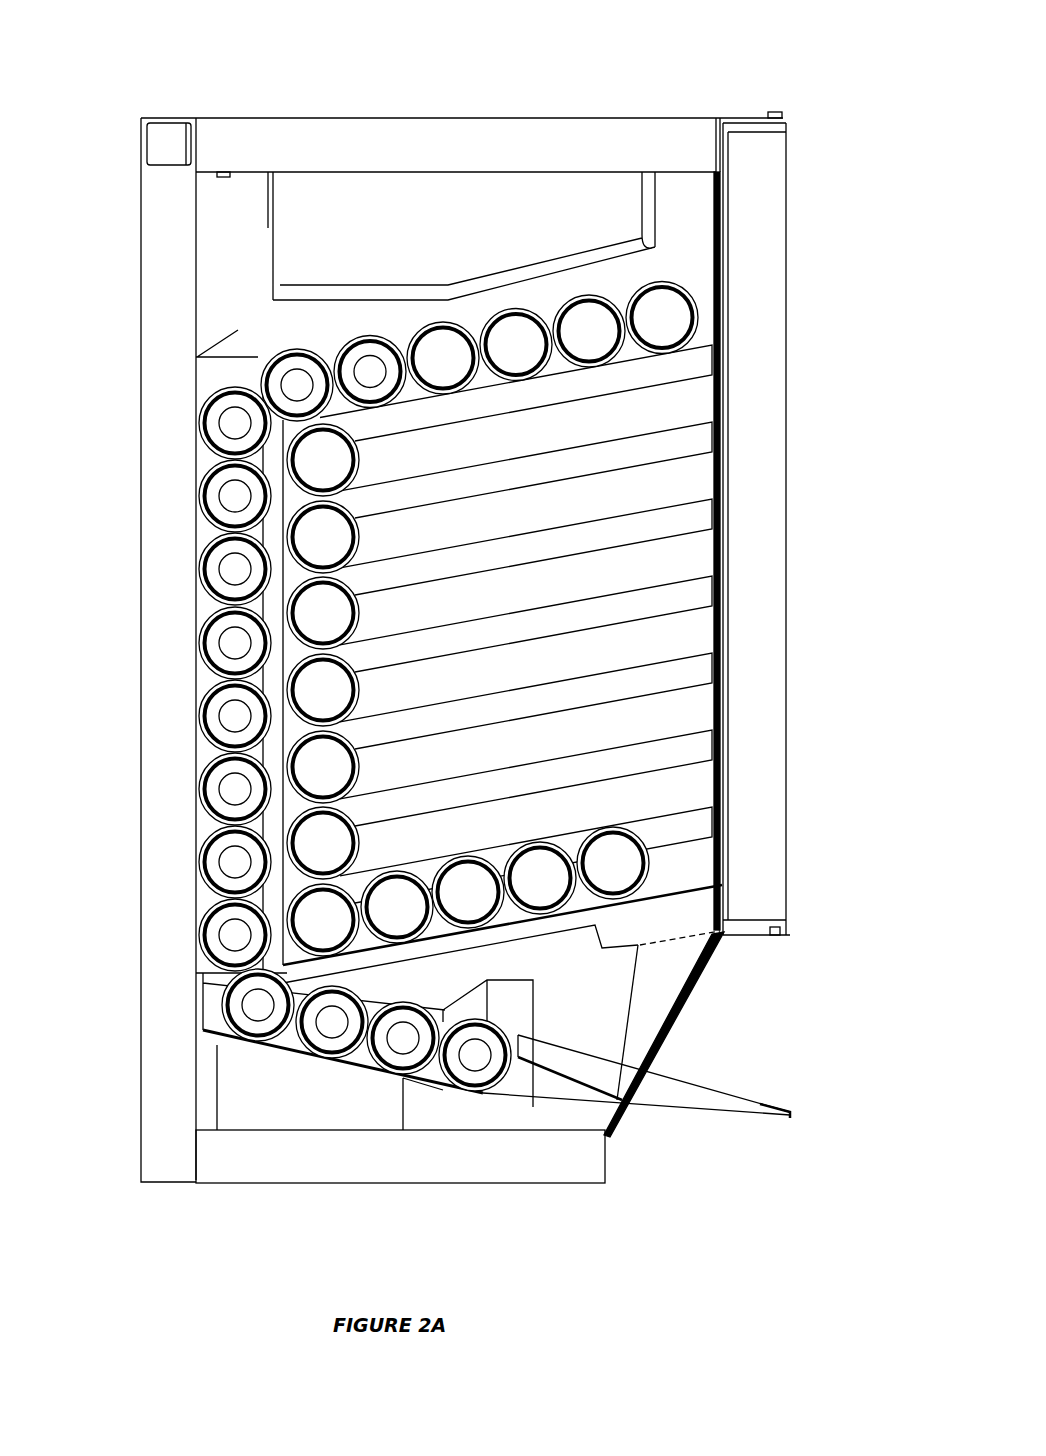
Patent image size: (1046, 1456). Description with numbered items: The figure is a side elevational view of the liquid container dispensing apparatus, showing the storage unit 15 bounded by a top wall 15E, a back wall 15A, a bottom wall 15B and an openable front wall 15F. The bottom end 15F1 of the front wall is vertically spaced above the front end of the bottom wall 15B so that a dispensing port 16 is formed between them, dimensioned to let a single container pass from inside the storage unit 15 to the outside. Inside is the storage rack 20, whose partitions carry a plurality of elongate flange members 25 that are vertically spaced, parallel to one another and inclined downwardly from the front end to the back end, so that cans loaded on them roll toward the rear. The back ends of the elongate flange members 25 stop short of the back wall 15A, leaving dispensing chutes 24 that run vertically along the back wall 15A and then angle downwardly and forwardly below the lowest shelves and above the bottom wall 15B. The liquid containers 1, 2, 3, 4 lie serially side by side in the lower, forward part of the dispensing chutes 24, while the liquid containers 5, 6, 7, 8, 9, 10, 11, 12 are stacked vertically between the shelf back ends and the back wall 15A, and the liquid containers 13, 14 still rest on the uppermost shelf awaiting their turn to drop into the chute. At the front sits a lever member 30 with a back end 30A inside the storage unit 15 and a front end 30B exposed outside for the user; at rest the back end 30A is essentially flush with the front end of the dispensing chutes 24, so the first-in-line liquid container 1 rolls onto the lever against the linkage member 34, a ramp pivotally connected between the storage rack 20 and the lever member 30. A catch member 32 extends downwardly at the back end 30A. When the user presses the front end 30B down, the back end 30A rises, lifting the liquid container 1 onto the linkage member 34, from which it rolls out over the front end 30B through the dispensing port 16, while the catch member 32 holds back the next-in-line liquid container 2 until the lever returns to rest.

The storage unit 15 is at (255, 100).
The top wall 15E is at (455, 117).
The back wall 15A is at (150, 660).
The bottom wall 15B is at (488, 1185).
The openable front wall 15F is at (788, 345).
The bottom end of front wall 15F1 is at (780, 942).
The dispensing port 16 is at (677, 1033).
The storage rack 20 is at (710, 352).
The elongate flange members 25 is at (712, 428).
The dispensing chutes 24 is at (288, 968).
The lever member 30 is at (658, 1093).
The back end of lever member 30A is at (443, 1090).
The front end of lever member 30B is at (785, 1117).
The catch member 32 is at (445, 1086).
The linkage member 34 is at (575, 1067).
The liquid container 1 is at (475, 1055).
The liquid container 2 is at (403, 1038).
The liquid container 3 is at (332, 1022).
The liquid container 4 is at (258, 1005).
The liquid container 5 is at (235, 935).
The liquid container 6 is at (235, 862).
The liquid container 7 is at (235, 789).
The liquid container 8 is at (235, 716).
The liquid container 9 is at (235, 643).
The liquid container 10 is at (235, 569).
The liquid container 11 is at (235, 496).
The liquid container 12 is at (235, 423).
The liquid container 13 is at (297, 385).
The liquid container 14 is at (370, 372).